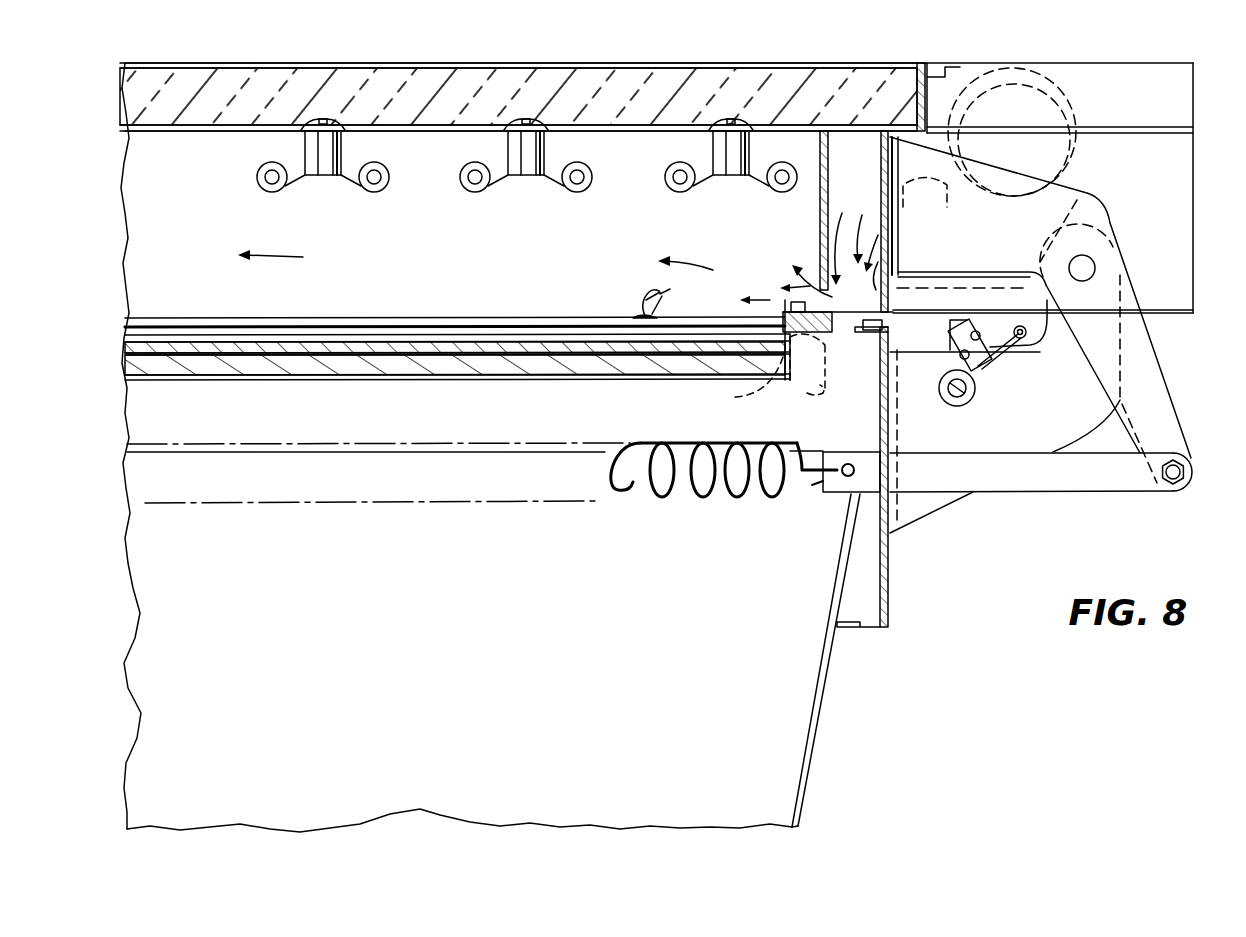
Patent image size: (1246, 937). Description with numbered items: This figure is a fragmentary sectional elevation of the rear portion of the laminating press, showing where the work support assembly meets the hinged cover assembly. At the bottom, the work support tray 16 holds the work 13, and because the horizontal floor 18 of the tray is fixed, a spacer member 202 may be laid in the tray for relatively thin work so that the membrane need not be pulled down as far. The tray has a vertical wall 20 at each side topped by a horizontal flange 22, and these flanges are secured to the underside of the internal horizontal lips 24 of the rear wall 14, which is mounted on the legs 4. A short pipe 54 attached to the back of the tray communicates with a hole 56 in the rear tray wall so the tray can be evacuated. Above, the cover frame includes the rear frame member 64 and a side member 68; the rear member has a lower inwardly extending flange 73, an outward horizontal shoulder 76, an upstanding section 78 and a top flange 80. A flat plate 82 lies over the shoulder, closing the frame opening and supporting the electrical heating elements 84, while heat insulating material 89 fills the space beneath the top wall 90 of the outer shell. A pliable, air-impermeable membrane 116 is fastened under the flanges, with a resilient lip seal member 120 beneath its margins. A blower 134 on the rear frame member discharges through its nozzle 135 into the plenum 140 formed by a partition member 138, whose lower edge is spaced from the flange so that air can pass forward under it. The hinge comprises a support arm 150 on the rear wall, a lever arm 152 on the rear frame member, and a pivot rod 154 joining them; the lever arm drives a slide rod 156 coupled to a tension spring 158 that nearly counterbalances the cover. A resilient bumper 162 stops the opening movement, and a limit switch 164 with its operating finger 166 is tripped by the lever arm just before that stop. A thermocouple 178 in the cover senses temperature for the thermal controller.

The leg 4 is at (826, 703).
The work 13 is at (136, 349).
The rear wall 14 is at (890, 591).
The work support tray 16 is at (244, 388).
The horizontal floor 18 is at (377, 381).
The vertical wall 20 is at (783, 315).
The horizontal flange 22 is at (860, 333).
The internal horizontal lip 24 is at (880, 330).
The short pipe 54 is at (806, 393).
The hole 56 is at (736, 396).
The rear frame member 64 is at (883, 152).
The side member 68 is at (378, 287).
The horizontal inwardly-extending flange 73 is at (838, 266).
The horizontal shoulder 76 is at (937, 157).
The upstanding section 78 is at (933, 100).
The horizontal flange 80 is at (947, 77).
The flat plate 82 is at (210, 145).
The electrical heating element 84 is at (320, 190).
The heat insulating material 89 is at (670, 82).
The top wall 90 is at (540, 65).
The membrane 116 is at (528, 318).
The lip seal member 120 is at (237, 318).
The blower 134 is at (1072, 118).
The discharge nozzle 135 is at (890, 183).
The partition member 138 is at (820, 205).
The plenum 140 is at (840, 215).
The support arm 150 is at (940, 507).
The lever arm 152 is at (1157, 403).
The pivot rod 154 is at (1095, 262).
The slide rod 156 is at (1073, 475).
The tension spring 158 is at (740, 498).
The resilient bumper 162 is at (972, 400).
The limit switch 164 is at (950, 348).
The operating finger 166 is at (1028, 337).
The thermocouple 178 is at (636, 314).
The spacer member 202 is at (134, 368).